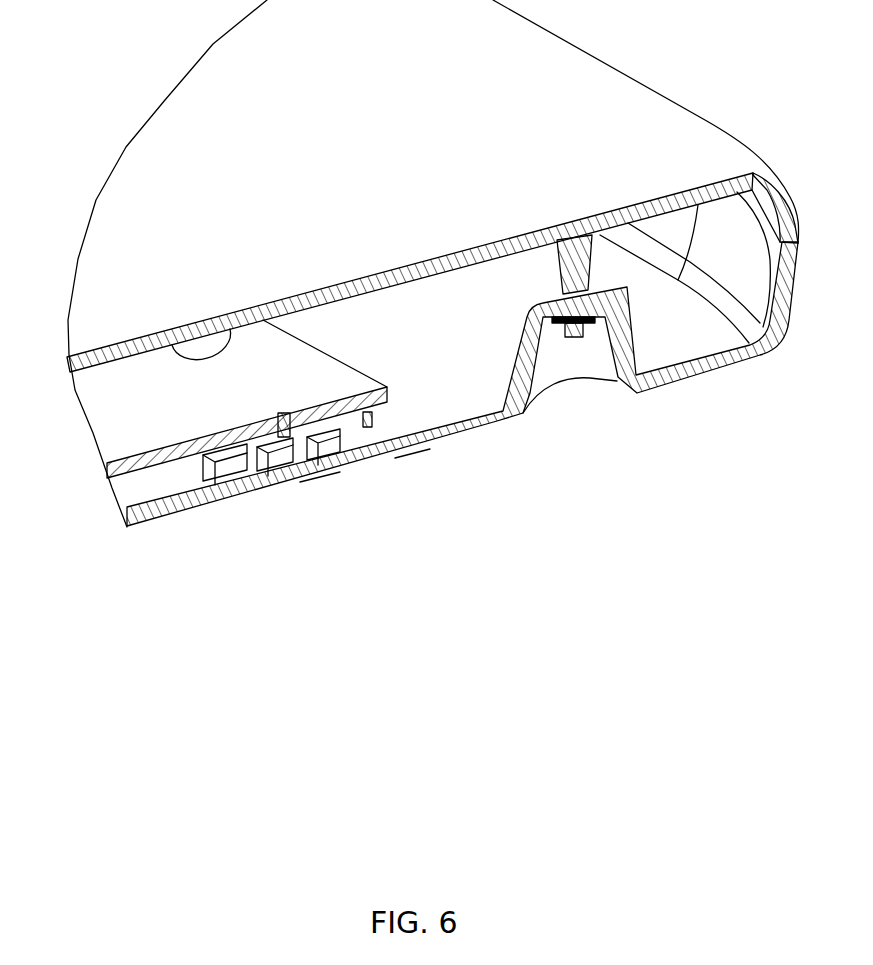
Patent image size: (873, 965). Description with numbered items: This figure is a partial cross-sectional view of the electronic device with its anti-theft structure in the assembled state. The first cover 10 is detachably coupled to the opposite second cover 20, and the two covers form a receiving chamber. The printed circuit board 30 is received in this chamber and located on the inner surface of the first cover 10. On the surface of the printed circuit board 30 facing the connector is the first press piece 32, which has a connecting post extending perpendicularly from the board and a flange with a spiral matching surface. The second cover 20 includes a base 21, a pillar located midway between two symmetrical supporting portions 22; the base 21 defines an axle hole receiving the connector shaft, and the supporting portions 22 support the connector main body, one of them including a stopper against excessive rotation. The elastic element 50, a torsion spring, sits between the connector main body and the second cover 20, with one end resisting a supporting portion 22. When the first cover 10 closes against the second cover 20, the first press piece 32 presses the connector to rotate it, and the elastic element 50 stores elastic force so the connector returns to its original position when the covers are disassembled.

The first cover 10 is at (567, 88).
The second cover 20 is at (647, 353).
The base 21 is at (320, 477).
The supporting portions 22 is at (413, 453).
The printed circuit board 30 is at (387, 397).
The first press piece 32 is at (278, 417).
The elastic element 50 is at (245, 496).